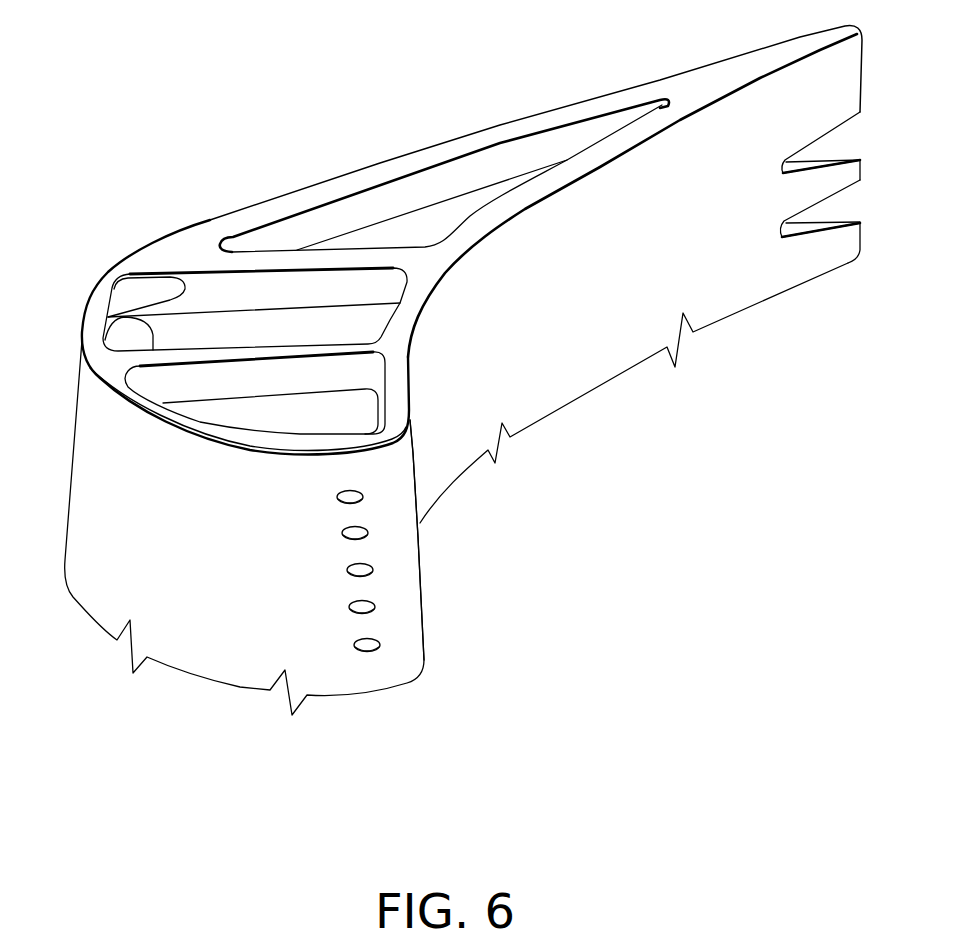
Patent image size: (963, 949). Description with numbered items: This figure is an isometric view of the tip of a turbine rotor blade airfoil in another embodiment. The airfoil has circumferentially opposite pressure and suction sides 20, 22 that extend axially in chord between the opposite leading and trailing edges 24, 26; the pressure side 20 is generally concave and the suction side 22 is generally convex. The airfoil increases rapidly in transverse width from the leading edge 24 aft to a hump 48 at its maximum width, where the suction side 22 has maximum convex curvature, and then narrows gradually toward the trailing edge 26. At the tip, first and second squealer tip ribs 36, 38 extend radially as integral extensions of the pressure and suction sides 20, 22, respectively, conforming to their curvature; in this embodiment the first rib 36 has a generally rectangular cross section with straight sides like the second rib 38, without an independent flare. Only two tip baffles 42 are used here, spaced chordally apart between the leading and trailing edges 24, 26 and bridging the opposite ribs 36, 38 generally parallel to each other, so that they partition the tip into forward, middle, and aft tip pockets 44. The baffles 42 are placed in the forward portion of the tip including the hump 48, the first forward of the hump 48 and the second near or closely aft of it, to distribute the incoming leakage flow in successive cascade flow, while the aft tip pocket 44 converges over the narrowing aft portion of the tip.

The pressure side 20 is at (583, 287).
The suction side 22 is at (187, 541).
The leading edge 24 is at (423, 583).
The trailing edge 26 is at (860, 162).
The first squealer tip rib 36 is at (483, 207).
The second squealer tip rib 38 is at (380, 173).
The tip baffle 42 is at (170, 296).
The tip pocket 44 is at (318, 425).
The hump 48 is at (97, 283).